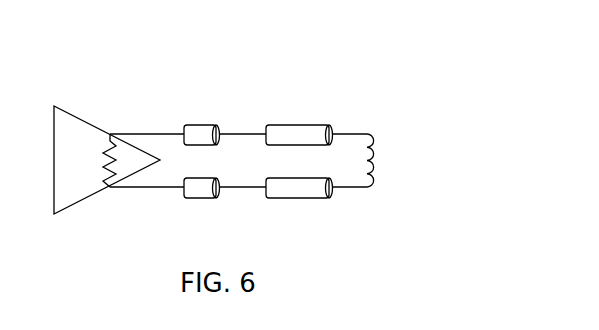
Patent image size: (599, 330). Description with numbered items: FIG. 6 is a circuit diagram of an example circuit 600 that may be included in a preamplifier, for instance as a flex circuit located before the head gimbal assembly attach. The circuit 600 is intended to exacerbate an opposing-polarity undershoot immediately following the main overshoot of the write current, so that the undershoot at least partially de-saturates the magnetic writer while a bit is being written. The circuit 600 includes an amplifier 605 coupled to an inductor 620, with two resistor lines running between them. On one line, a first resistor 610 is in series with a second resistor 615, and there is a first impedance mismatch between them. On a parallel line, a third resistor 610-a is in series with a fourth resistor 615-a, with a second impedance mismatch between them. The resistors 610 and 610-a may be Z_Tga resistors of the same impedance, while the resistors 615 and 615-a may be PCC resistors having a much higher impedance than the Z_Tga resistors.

The circuit 600 is at (466, 73).
The amplifier 605 is at (80, 200).
The first resistor 610 is at (191, 125).
The third resistor 610-a is at (194, 198).
The second resistor 615 is at (285, 125).
The fourth resistor 615-a is at (300, 198).
The inductor 620 is at (374, 162).